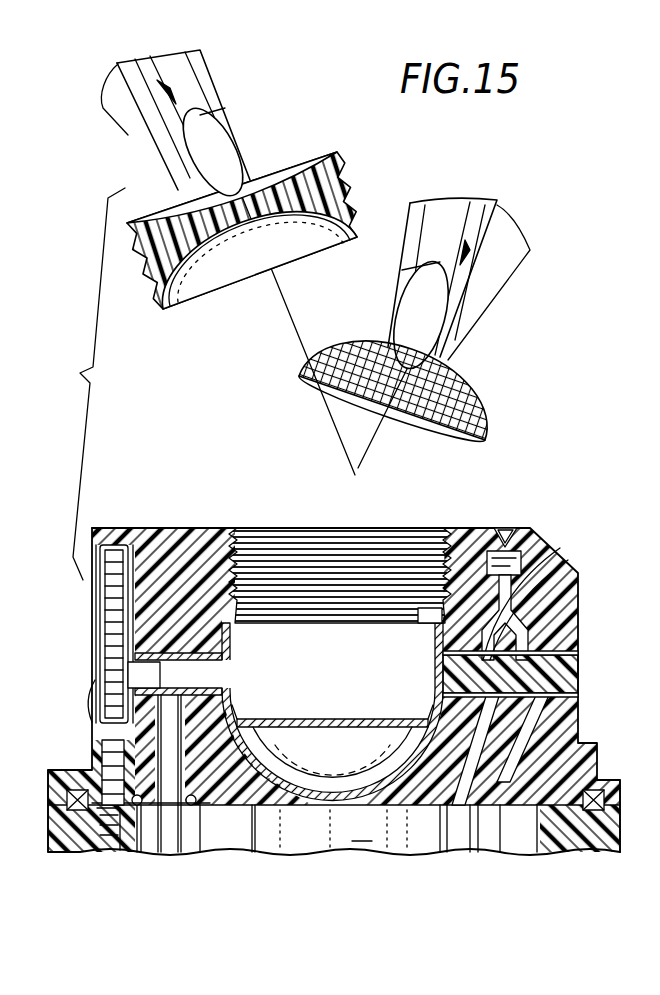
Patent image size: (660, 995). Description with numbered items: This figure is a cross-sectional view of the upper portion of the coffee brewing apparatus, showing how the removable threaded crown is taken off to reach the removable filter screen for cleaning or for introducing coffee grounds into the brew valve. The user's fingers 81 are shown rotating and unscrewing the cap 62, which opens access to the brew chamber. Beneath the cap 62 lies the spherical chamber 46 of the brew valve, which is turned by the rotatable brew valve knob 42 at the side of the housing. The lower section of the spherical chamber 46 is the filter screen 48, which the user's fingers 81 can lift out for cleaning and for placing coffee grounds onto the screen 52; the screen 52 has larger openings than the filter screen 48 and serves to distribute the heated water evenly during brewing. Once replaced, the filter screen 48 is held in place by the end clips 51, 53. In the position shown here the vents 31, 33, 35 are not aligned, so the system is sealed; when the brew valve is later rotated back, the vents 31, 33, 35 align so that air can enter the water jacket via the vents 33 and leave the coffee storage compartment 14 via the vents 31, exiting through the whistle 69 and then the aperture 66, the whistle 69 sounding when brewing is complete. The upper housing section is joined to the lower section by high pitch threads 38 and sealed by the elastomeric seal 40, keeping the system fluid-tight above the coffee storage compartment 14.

The inner coffee storage compartment 14 is at (334, 691).
The vent 31 is at (576, 604).
The vent 33 is at (577, 585).
The vent 35 is at (530, 558).
The high pitch threads 38 is at (50, 767).
The elastomeric seal 40 is at (52, 806).
The brew valve knob 42 is at (112, 667).
The spherical chamber 46 is at (300, 797).
The filter screen 48 is at (465, 382).
The end clip 51 is at (233, 527).
The screen 52 is at (353, 722).
The end clip 53 is at (415, 612).
The cap 62 is at (272, 163).
The aperture 66 is at (505, 538).
The whistle 69 is at (543, 550).
The user's fingers 81 is at (204, 84).